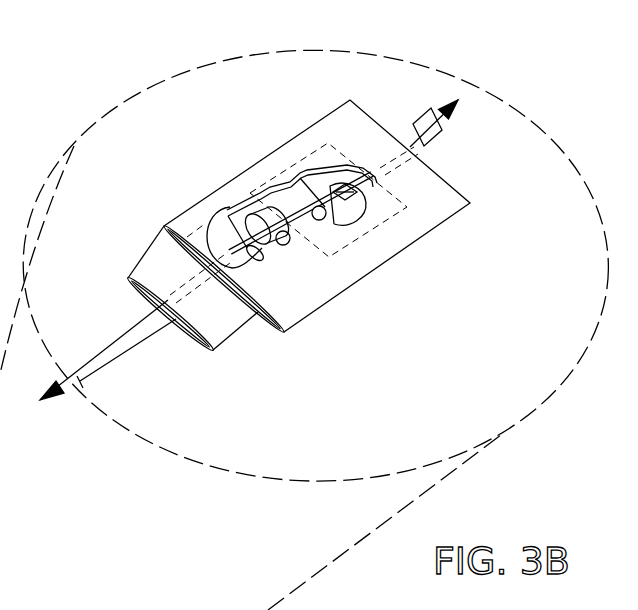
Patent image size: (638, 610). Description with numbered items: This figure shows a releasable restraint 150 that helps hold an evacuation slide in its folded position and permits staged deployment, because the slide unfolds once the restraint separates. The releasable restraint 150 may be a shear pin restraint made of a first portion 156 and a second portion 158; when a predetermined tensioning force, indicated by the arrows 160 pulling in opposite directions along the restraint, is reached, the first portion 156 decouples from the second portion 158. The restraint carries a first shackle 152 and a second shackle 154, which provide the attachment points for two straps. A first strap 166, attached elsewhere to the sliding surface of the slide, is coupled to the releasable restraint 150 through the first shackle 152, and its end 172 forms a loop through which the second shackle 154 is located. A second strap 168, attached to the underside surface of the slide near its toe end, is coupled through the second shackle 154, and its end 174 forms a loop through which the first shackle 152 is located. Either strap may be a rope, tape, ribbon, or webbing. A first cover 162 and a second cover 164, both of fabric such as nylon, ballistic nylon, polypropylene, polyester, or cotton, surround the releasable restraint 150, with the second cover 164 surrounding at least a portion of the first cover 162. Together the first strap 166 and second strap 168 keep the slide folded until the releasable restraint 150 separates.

The releasable restraint 150 is at (314, 248).
The first shackle 152 is at (268, 244).
The second shackle 154 is at (340, 226).
The first portion 156 is at (262, 206).
The second portion 158 is at (298, 190).
The arrows 160 is at (96, 364).
The first cover 162 is at (168, 272).
The second cover 164 is at (447, 208).
The first strap 166 is at (126, 340).
The second strap 168 is at (431, 137).
The end 172 is at (222, 236).
The end 174 is at (333, 184).